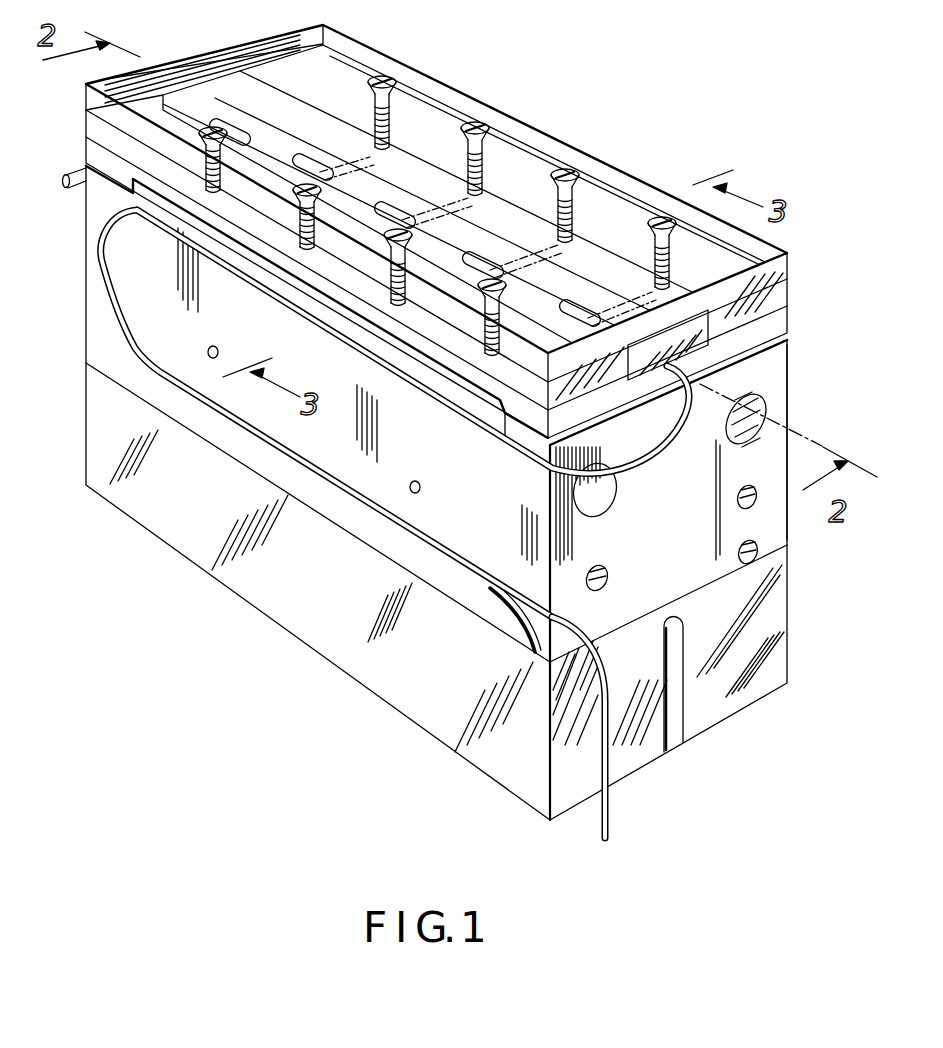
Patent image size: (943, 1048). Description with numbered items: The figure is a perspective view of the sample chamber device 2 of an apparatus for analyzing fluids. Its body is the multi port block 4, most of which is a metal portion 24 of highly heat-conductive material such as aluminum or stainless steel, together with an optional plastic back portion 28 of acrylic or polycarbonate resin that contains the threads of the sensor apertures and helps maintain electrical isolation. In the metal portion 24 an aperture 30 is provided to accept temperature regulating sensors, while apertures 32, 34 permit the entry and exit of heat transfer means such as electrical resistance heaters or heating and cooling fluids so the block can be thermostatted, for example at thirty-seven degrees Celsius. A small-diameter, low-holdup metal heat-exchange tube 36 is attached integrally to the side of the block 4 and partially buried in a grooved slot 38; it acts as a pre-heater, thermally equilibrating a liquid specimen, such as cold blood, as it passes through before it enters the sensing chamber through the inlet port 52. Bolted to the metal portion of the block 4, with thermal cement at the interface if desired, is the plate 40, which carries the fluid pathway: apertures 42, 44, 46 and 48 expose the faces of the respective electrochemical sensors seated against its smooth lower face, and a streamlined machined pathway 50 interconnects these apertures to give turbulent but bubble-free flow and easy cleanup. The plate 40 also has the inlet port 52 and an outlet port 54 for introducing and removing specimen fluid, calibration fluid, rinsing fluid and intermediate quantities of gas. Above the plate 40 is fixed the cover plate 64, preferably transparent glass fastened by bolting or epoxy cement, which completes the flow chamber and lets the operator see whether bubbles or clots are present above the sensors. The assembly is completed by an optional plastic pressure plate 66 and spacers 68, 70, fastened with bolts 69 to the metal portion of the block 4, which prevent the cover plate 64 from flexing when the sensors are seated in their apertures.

The sample chamber device 2 is at (787, 413).
The multi port block 4 is at (700, 582).
The metal portion 24 is at (780, 457).
The plastic back portion 28 is at (785, 598).
The aperture 30 is at (760, 398).
The aperture 32 is at (760, 506).
The aperture 34 is at (598, 570).
The heat-exchange tube 36 is at (603, 826).
The grooved slot 38 is at (557, 622).
The plate 40 is at (782, 327).
The aperture 42 is at (300, 162).
The aperture 44 is at (400, 220).
The aperture 46 is at (482, 262).
The aperture 48 is at (600, 322).
The machined pathway 50 is at (620, 345).
The inlet port 52 is at (660, 447).
The outlet port 54 is at (78, 190).
The cover plate 64 is at (700, 327).
The plastic pressure plate 66 is at (787, 268).
The spacer 68 is at (86, 126).
The bolts 69 is at (378, 212).
The spacer 70 is at (787, 290).